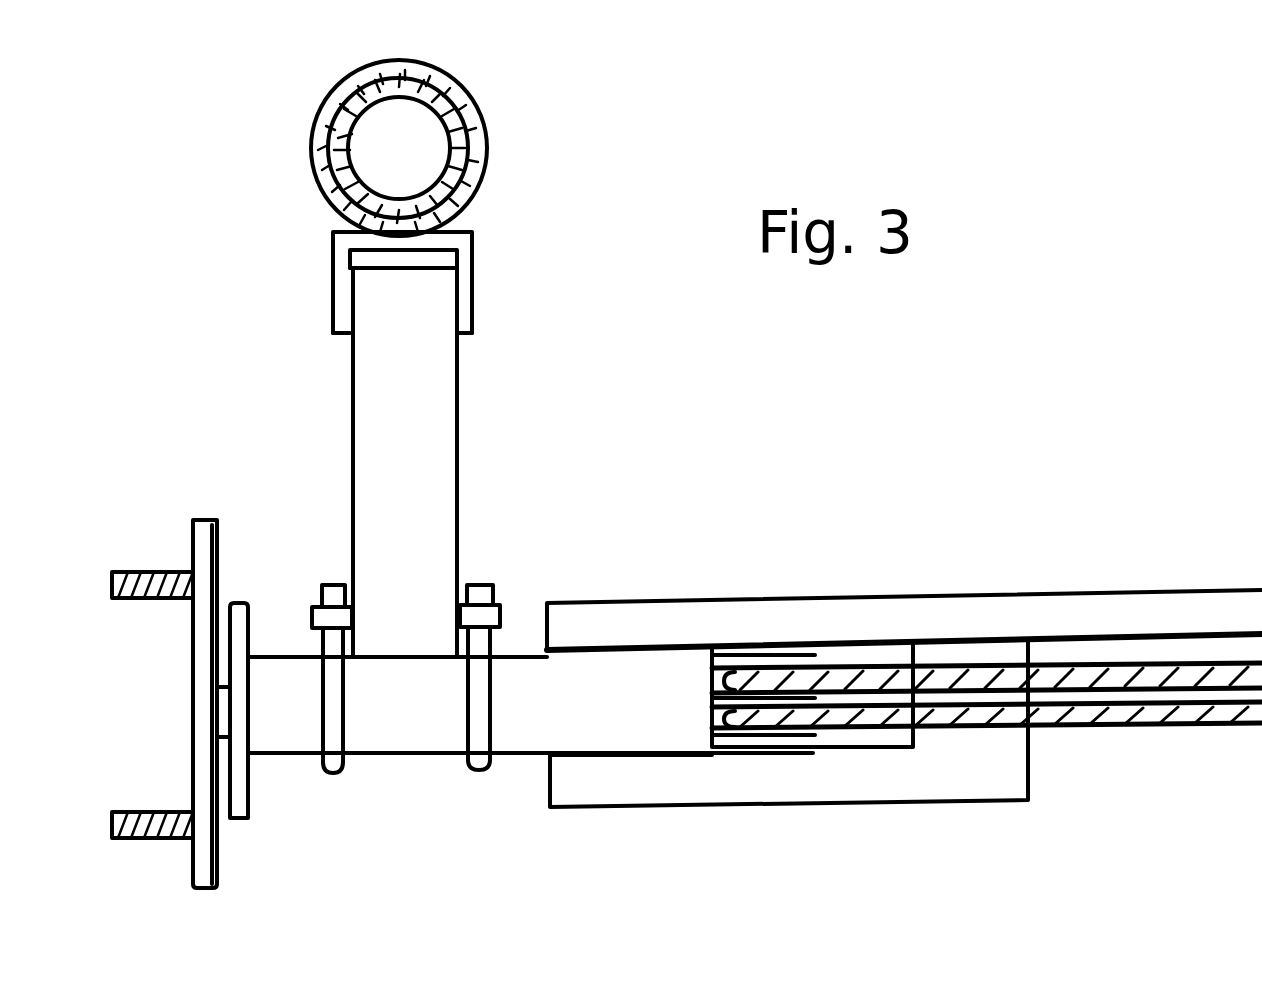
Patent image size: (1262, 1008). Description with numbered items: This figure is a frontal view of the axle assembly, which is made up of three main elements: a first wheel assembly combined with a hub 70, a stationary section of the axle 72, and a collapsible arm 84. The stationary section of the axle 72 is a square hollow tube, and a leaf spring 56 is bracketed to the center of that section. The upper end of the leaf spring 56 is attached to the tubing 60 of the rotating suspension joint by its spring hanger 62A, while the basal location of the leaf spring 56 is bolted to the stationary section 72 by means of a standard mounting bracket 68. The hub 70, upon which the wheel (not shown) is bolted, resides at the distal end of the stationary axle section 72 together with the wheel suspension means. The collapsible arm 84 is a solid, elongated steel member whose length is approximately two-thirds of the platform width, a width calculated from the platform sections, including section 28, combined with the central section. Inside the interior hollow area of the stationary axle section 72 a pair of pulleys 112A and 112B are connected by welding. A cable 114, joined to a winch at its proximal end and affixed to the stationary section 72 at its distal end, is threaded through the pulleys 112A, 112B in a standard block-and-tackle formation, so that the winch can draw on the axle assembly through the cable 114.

The section 28 is at (418, 103).
The tubing of the rotating suspension joint 60 is at (487, 120).
The spring hanger 62A is at (472, 290).
The leaf spring 56 is at (457, 430).
The hub 70 is at (207, 520).
The standard mounting bracket 68 is at (498, 607).
The stationary section of the axle 72 is at (510, 747).
The collapsible arm 84 is at (803, 607).
The pulley 112A is at (895, 548).
The pulley 112B is at (855, 853).
The cable 114 is at (1192, 727).